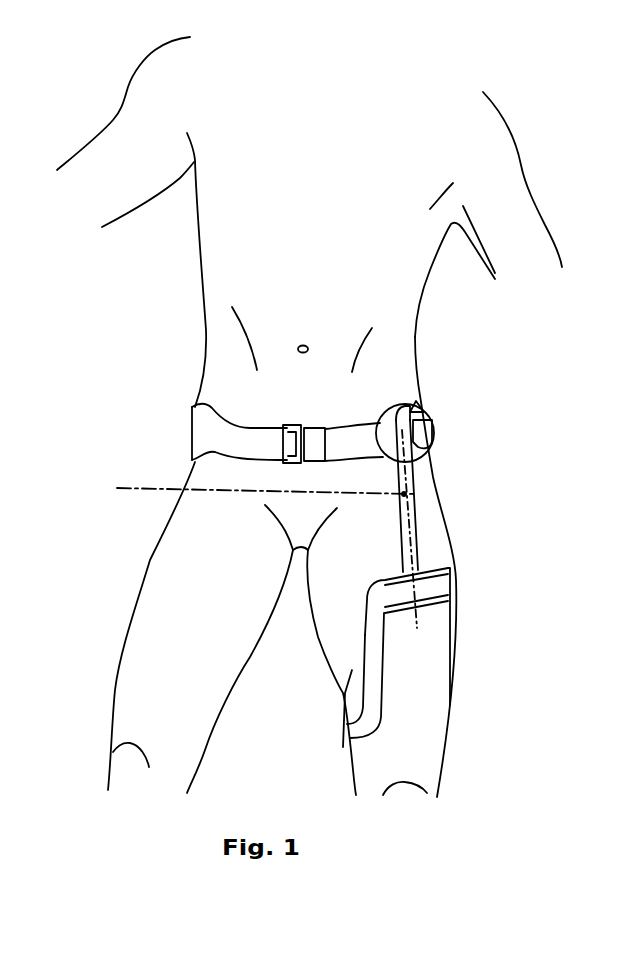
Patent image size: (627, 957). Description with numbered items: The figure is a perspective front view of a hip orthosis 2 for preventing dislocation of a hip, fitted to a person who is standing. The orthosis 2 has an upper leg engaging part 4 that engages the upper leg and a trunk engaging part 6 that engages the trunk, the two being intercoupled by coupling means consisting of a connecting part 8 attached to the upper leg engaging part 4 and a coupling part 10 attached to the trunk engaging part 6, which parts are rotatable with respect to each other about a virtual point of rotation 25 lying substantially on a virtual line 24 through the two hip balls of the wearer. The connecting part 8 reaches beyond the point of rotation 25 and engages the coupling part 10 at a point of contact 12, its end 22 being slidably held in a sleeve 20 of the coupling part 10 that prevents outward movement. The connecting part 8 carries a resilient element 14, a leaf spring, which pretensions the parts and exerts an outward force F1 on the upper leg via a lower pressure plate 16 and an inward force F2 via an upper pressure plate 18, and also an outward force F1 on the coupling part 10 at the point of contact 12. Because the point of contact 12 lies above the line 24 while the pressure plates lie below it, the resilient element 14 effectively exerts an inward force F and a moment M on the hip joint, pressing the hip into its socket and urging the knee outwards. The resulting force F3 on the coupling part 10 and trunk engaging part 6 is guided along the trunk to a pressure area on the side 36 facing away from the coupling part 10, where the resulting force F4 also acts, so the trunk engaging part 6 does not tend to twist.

The hip orthosis 2 is at (479, 786).
The upper leg engaging part 4 is at (437, 587).
The trunk engaging part 6 is at (347, 428).
The connecting part 8 is at (415, 540).
The coupling part 10 is at (393, 405).
The point of contact 12 is at (433, 407).
The resilient element 14 is at (415, 513).
The lower pressure plate 16 is at (338, 753).
The upper pressure plate 18 is at (435, 601).
The sleeve 20 is at (420, 437).
The end of the connecting part 22 is at (423, 403).
The virtual line 24 is at (145, 490).
The virtual point of rotation 25 is at (400, 497).
The side of the trunk 36 is at (193, 417).
The force F is at (420, 494).
The force F1 is at (340, 733).
The force F2 is at (466, 586).
The resulting force F3 is at (410, 419).
The resulting force F4 is at (186, 433).
The moment M is at (535, 478).